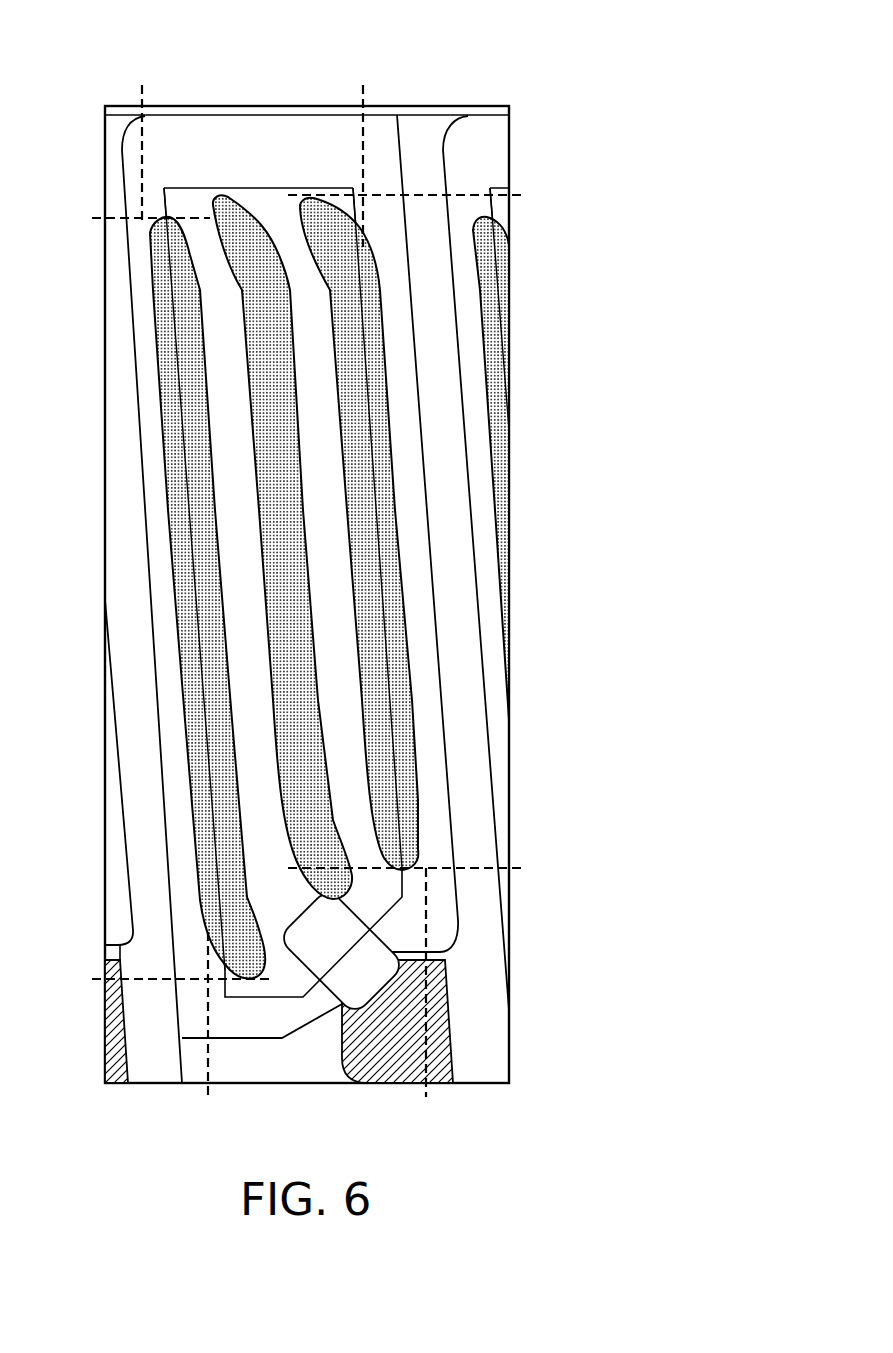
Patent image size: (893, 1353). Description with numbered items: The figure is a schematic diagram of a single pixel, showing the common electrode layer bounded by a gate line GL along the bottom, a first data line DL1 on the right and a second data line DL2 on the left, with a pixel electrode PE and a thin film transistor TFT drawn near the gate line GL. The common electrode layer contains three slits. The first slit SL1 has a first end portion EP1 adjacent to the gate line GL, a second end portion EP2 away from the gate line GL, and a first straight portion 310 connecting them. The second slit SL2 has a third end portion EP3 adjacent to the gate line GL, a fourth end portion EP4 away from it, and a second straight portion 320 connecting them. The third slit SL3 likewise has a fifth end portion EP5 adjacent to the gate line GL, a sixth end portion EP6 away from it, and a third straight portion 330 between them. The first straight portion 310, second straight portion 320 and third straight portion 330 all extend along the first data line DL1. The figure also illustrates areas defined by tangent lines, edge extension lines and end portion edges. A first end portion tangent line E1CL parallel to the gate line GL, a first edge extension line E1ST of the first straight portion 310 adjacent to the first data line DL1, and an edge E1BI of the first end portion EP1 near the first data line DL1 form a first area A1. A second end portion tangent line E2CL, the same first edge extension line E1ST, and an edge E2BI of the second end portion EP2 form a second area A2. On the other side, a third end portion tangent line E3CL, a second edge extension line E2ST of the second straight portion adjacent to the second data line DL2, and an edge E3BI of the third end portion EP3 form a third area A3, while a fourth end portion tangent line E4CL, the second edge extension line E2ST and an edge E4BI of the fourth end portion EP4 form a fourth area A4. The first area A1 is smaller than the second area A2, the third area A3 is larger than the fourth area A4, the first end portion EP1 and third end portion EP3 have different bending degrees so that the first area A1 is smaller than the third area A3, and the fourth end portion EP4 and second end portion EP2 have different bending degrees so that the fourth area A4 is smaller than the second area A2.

The sixth end portion EP6 is at (201, 460).
The edge of the second end portion E2BI is at (346, 196).
The second edge extension line E2ST is at (176, 594).
The third slit SL3 is at (180, 219).
The second slit SL2 is at (223, 190).
The first slit SL1 is at (305, 189).
The first edge extension line E1ST is at (401, 594).
The edge of the first end portion E1BI is at (525, 927).
The fourth area A4 is at (150, 210).
The fourth end portion tangent line E4CL is at (127, 216).
The edge of the fourth end portion E4BI is at (147, 228).
The fourth end portion EP4 is at (157, 598).
The second end portion tangent line E2CL is at (431, 194).
The second area A2 is at (360, 212).
The second end portion EP2 is at (434, 534).
The second data line DL2 is at (120, 347).
The first data line DL1 is at (440, 355).
The first straight portion 310 is at (383, 433).
The second straight portion 320 is at (307, 508).
The third straight portion 330 is at (172, 578).
The fifth end portion EP5 is at (337, 880).
The third end portion EP3 is at (210, 945).
The third end portion tangent line E3CL is at (159, 977).
The first end portion EP1 is at (420, 858).
The first end portion tangent line E1CL is at (431, 866).
The first area A1 is at (414, 871).
The third area A3 is at (217, 967).
The pixel electrode PE is at (268, 1000).
The gate line GL is at (320, 1063).
The thin film transistor TFT is at (395, 1063).
The edge of the third end portion E3BI is at (235, 978).